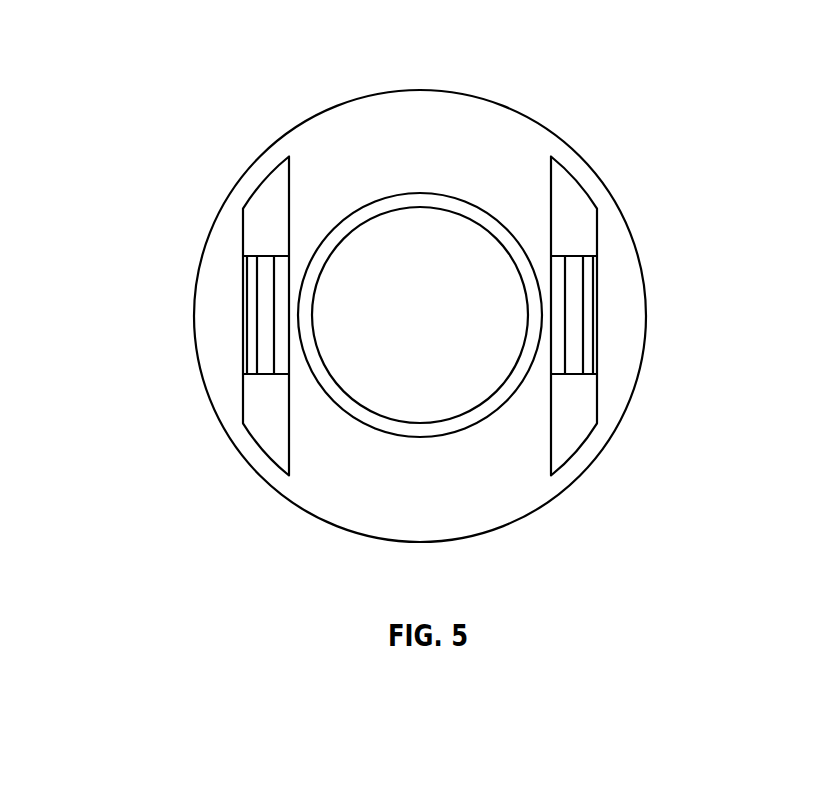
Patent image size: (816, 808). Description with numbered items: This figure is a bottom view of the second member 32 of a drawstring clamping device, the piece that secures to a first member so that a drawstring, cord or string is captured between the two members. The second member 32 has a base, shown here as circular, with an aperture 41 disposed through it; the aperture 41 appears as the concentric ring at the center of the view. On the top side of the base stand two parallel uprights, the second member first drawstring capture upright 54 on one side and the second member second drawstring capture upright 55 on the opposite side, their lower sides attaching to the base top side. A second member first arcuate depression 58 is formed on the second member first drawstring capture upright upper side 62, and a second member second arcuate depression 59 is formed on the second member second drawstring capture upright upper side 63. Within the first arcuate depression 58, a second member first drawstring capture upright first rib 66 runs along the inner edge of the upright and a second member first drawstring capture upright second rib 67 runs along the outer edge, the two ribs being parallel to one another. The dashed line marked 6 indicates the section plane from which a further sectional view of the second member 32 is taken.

The second member 32 is at (150, 50).
The section line 6- 6 is at (420, 90).
The aperture 41 is at (364, 386).
The second member first drawstring capture upright 54 is at (255, 190).
The second member second drawstring capture upright 55 is at (588, 190).
The second member first arcuate depression 58 is at (262, 281).
The second member second arcuate depression 59 is at (573, 325).
The second member first drawstring capture upright upper side 62 is at (275, 188).
The second member second drawstring capture upright upper side 63 is at (562, 190).
The second member first drawstring capture upright first rib 66 is at (282, 323).
The second member first drawstring capture upright second rib 67 is at (247, 334).